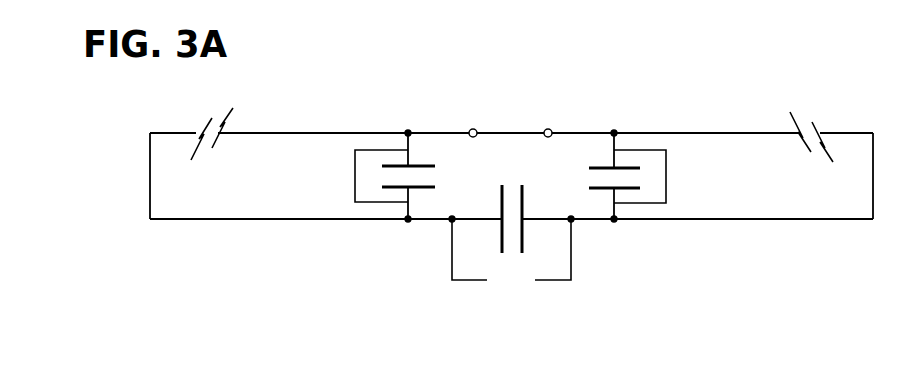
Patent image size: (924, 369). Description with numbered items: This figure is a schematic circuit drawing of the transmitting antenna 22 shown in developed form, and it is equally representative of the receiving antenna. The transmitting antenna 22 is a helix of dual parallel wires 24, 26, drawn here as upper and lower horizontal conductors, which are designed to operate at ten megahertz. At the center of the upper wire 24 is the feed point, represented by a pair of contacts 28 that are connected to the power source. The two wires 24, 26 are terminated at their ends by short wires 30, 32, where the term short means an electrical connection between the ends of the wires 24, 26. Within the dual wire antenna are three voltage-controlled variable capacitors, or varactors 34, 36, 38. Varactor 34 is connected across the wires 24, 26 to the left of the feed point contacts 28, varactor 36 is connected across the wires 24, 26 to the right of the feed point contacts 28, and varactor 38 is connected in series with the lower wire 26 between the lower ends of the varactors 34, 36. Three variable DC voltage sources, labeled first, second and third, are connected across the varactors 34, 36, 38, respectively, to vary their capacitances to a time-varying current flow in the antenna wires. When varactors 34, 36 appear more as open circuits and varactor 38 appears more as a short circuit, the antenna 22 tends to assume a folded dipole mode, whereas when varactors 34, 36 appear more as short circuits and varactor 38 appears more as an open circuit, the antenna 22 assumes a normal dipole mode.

The transmitting antenna 22 is at (643, 122).
The wire 24 is at (247, 133).
The wire 26 is at (243, 219).
The feed point contacts 28 is at (541, 133).
The short wire 30 is at (150, 180).
The short wire 32 is at (873, 183).
The varactor 34 is at (415, 166).
The varactor 36 is at (608, 166).
The varactor 38 is at (524, 228).